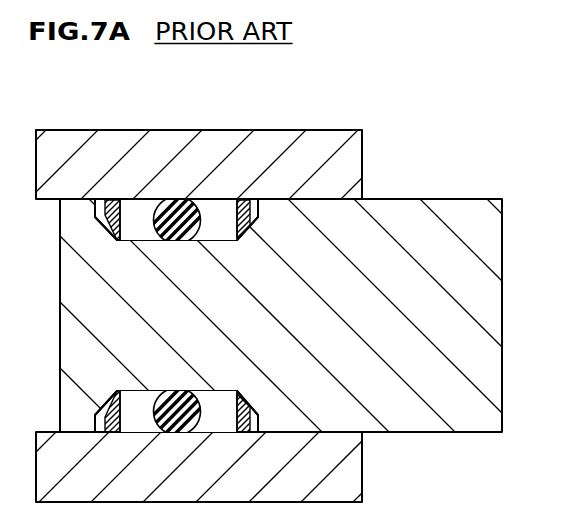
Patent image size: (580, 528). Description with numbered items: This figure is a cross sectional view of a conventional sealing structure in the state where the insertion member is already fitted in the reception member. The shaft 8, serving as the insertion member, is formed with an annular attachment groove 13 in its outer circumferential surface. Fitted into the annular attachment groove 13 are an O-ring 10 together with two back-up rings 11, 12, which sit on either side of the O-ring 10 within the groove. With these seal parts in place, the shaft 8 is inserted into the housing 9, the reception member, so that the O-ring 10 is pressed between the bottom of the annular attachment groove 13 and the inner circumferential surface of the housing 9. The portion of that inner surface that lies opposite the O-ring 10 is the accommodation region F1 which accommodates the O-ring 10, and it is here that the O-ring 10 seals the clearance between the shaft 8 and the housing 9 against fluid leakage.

The shaft 8 is at (457, 199).
The housing 9 is at (287, 130).
The O-ring 10 is at (182, 203).
The back-up ring 11 is at (240, 203).
The back-up ring 12 is at (112, 203).
The annular attachment groove 13 is at (145, 240).
The accommodation region F1 is at (215, 210).